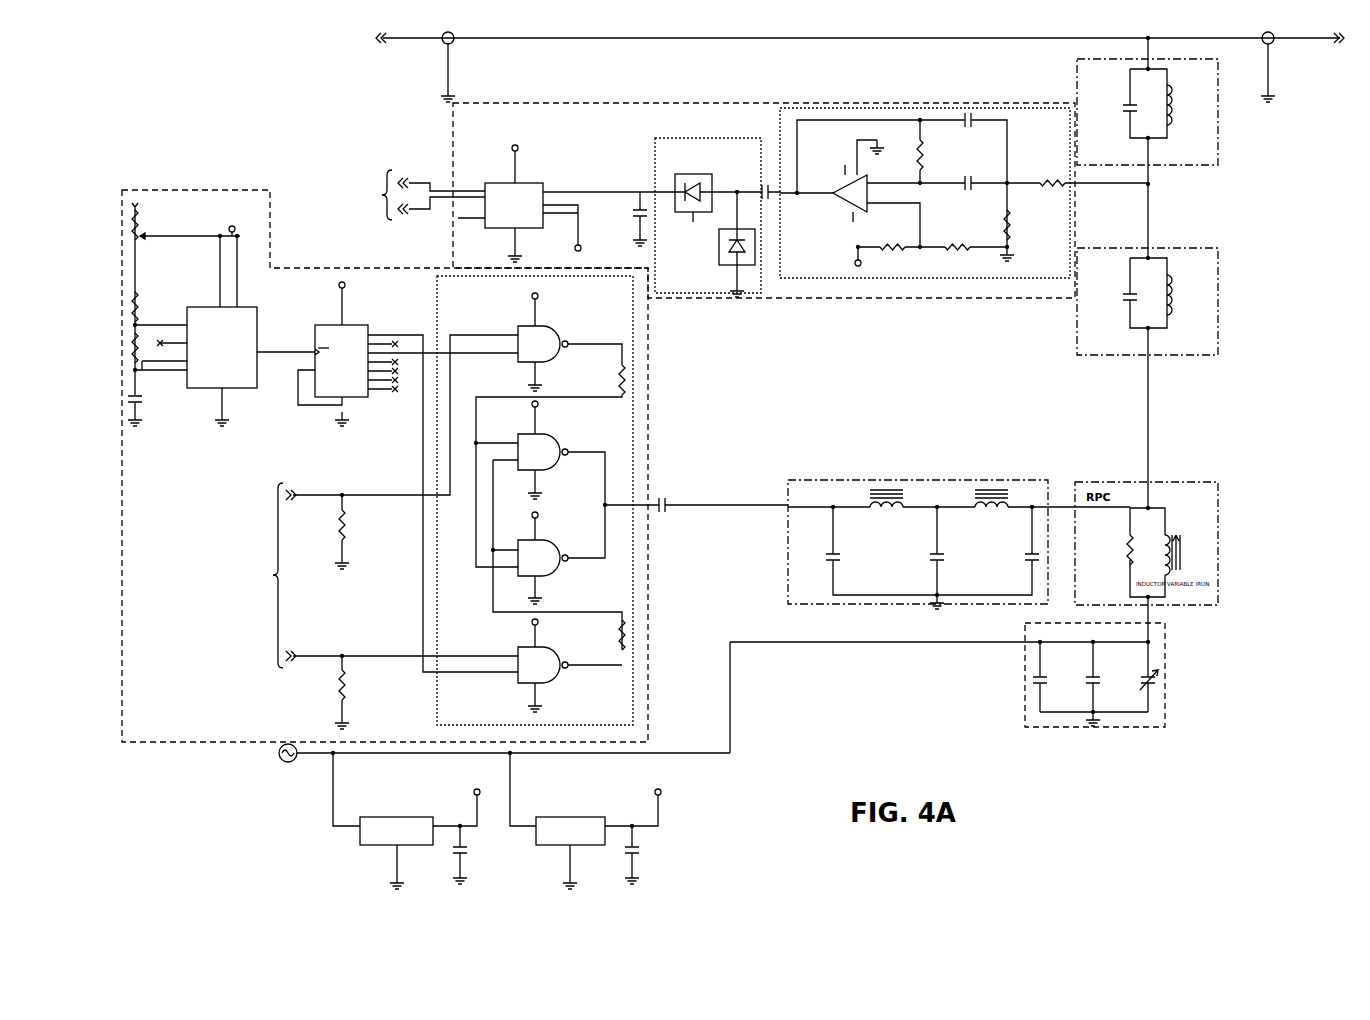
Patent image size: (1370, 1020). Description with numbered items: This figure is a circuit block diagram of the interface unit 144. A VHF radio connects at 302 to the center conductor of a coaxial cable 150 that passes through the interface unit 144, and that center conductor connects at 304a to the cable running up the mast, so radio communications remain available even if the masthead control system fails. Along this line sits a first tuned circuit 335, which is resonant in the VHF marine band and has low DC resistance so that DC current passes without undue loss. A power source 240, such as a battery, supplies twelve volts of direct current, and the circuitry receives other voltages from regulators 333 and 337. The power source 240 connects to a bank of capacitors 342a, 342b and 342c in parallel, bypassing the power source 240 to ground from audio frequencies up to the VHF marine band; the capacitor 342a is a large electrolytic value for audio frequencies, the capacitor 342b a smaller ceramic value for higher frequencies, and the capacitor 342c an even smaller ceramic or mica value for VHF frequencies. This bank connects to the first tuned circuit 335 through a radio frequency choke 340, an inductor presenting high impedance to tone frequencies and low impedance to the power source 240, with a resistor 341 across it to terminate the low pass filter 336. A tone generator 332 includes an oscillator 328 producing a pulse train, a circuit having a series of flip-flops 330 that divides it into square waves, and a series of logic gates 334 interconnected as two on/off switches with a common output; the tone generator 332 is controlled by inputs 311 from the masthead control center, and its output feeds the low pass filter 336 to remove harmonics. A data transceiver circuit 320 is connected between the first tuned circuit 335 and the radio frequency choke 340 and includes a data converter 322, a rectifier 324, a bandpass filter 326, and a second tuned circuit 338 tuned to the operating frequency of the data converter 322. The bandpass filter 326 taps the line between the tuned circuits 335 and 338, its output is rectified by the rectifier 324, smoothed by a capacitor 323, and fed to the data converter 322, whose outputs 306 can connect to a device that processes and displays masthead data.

The interface unit 144 is at (284, 98).
The VHF radio connection point 302 is at (378, 46).
The coaxial cable 150 is at (444, 46).
The cable connection point 304a is at (1332, 46).
The data converter outputs 306 is at (388, 187).
The data transceiver circuit 320 is at (696, 122).
The data converter 322 is at (506, 188).
The capacitor 323 is at (634, 212).
The rectifier 324 is at (662, 162).
The bandpass filter 326 is at (796, 118).
The oscillator 328 is at (203, 312).
The circuit having a series of flip-flops 330 is at (324, 338).
The tone generator 332 is at (386, 284).
The series of logic gates 334 is at (628, 444).
The first tuned circuit 335 is at (1086, 92).
The second tuned circuit 338 is at (1086, 338).
The low pass filter 336 is at (838, 488).
The inputs 311 is at (276, 498).
The radio frequency choke 340 is at (1178, 552).
The resistor 341 is at (1127, 550).
The capacitor 342a is at (1036, 686).
The capacitor 342b is at (1090, 690).
The capacitor 342c is at (1156, 678).
The power source 240 is at (285, 763).
The regulator 333 is at (388, 818).
The regulator 337 is at (566, 818).